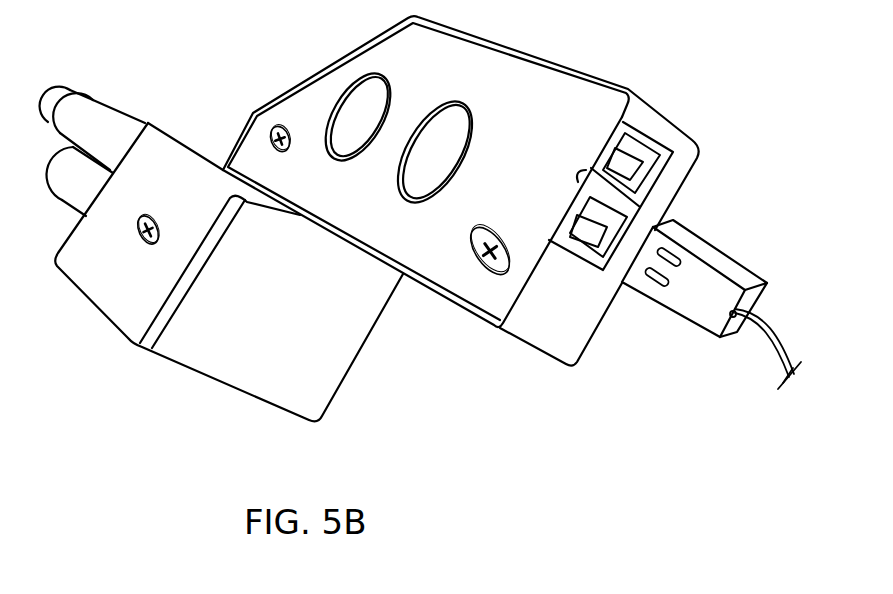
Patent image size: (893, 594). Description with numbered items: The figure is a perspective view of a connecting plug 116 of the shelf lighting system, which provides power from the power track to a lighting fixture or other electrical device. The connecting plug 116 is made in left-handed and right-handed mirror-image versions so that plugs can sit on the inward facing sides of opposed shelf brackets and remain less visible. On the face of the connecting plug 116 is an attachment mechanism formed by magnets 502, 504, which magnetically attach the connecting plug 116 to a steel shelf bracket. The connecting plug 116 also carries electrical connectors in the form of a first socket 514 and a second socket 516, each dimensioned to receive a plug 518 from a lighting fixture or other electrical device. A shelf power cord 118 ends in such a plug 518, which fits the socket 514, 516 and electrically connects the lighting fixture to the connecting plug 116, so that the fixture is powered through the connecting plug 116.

The connecting plug 116 is at (465, 85).
The magnet 502 is at (413, 182).
The magnet 504 is at (342, 150).
The first socket 514 is at (597, 230).
The second socket 516 is at (624, 162).
The plug 518 is at (680, 306).
The shelf power cord 118 is at (760, 335).